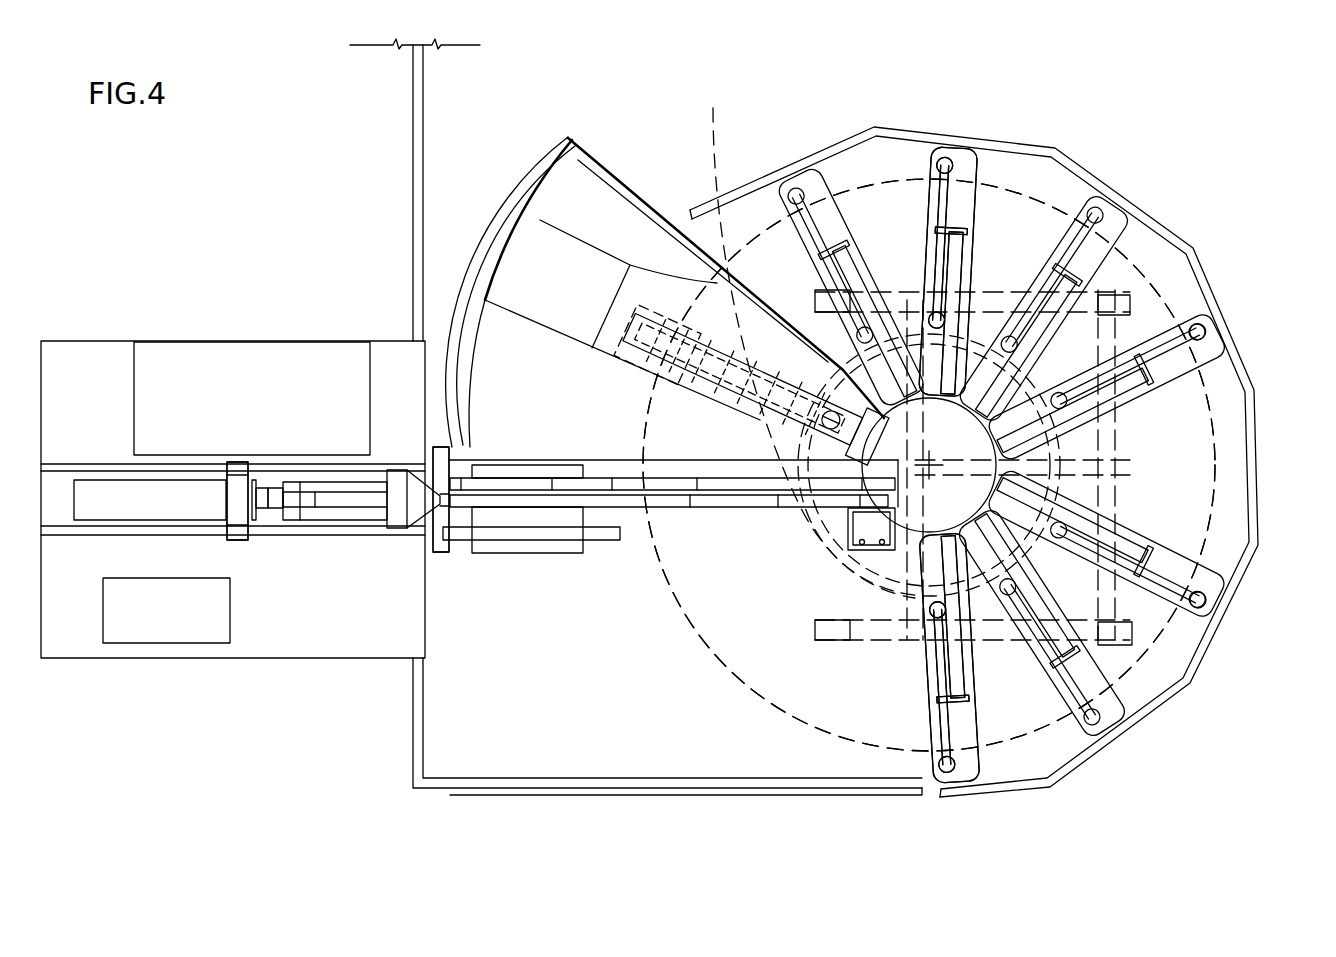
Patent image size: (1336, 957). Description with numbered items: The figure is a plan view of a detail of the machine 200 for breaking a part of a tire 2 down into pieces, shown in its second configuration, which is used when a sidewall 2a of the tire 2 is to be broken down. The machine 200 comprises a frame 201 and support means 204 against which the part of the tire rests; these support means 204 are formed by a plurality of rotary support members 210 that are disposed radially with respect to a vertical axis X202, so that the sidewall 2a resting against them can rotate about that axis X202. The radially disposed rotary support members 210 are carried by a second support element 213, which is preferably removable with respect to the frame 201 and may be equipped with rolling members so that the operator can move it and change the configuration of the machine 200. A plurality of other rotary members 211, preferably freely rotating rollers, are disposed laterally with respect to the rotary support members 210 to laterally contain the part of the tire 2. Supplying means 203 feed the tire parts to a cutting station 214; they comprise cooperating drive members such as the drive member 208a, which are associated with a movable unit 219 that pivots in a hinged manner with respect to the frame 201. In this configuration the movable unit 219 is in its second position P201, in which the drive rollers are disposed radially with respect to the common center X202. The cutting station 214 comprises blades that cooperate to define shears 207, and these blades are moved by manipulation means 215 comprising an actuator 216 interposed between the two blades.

The frame 201 is at (303, 540).
The manipulation means 215 is at (308, 478).
The actuator 216 is at (308, 478).
The shears 207 is at (707, 518).
The cutting station 214 is at (747, 520).
The drive member 208a is at (830, 548).
The movable unit 219 is at (577, 228).
The machine 200 is at (1008, 125).
The tire 2 is at (1062, 202).
The sidewall 2a is at (1062, 202).
The second support element 213 is at (1108, 500).
The vertical axis X202 is at (930, 466).
The support means 204 is at (943, 240).
The rotary support members 210 is at (943, 240).
The other rotary members 211 is at (1207, 334).
The supplying means 203 is at (665, 415).
The second position P201 is at (809, 343).